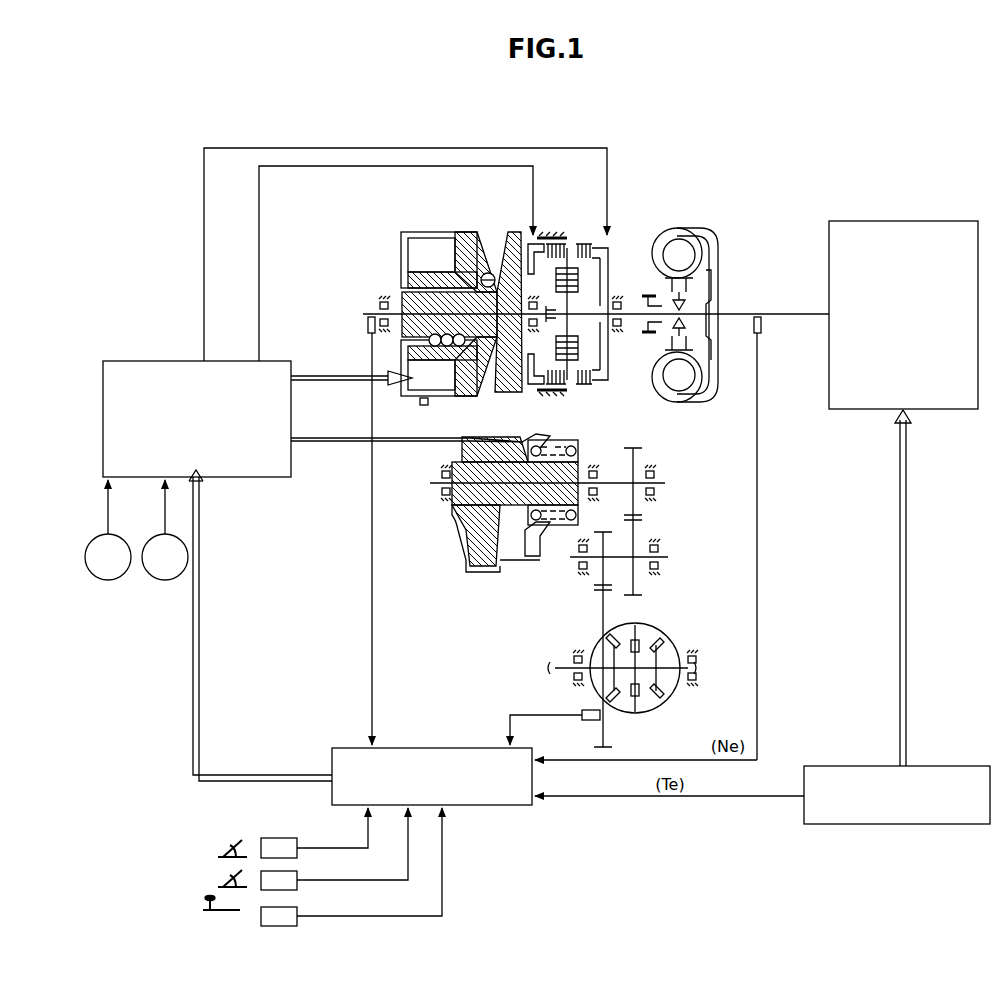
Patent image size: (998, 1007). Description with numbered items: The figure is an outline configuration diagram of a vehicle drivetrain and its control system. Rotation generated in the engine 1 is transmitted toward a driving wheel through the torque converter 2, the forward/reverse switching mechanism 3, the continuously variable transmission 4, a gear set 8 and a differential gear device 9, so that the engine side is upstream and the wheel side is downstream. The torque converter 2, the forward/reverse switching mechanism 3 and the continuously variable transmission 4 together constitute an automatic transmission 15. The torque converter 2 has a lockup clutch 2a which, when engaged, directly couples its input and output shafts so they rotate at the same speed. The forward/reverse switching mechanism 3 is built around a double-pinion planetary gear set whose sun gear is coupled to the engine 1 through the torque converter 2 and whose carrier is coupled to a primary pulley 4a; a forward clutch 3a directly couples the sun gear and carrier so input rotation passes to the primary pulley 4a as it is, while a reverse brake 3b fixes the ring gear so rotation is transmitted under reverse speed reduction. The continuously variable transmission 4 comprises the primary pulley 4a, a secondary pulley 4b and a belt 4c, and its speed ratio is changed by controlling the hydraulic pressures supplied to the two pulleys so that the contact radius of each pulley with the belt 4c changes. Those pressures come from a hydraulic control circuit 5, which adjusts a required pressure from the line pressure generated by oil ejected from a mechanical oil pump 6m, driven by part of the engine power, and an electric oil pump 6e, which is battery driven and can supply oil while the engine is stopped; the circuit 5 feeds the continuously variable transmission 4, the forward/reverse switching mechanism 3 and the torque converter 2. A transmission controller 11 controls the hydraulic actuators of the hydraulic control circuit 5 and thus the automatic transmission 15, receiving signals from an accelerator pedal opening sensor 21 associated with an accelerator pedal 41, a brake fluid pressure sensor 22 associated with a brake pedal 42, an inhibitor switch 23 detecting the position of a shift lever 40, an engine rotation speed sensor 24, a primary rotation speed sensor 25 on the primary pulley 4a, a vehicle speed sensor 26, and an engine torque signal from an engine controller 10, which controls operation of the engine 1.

The engine 1 is at (903, 221).
The torque converter 2 is at (707, 271).
The lockup clutch 2a is at (712, 298).
The forward/reverse switching mechanism 3 is at (575, 273).
The forward clutch 3a is at (586, 245).
The reverse brake 3b is at (560, 242).
The continuously variable transmission 4 is at (423, 293).
The primary pulley 4a is at (412, 231).
The secondary pulley 4b is at (544, 571).
The belt 4c is at (488, 273).
The hydraulic control circuit 5 is at (135, 360).
The mechanical oil pump 6m is at (108, 580).
The electric oil pump 6e is at (164, 580).
The gear set 8 is at (677, 507).
The differential gear device 9 is at (677, 626).
The engine controller 10 is at (939, 765).
The transmission controller 11 is at (332, 770).
The automatic transmission 15 is at (633, 163).
The accelerator pedal opening sensor 21 is at (276, 838).
The brake fluid pressure sensor 22 is at (298, 884).
The inhibitor switch 23 is at (298, 920).
The engine rotation speed sensor 24 is at (761, 331).
The primary rotation speed sensor 25 is at (367, 328).
The vehicle speed sensor 26 is at (590, 722).
The shift lever 40 is at (203, 903).
The accelerator pedal 41 is at (234, 843).
The brake pedal 42 is at (231, 880).